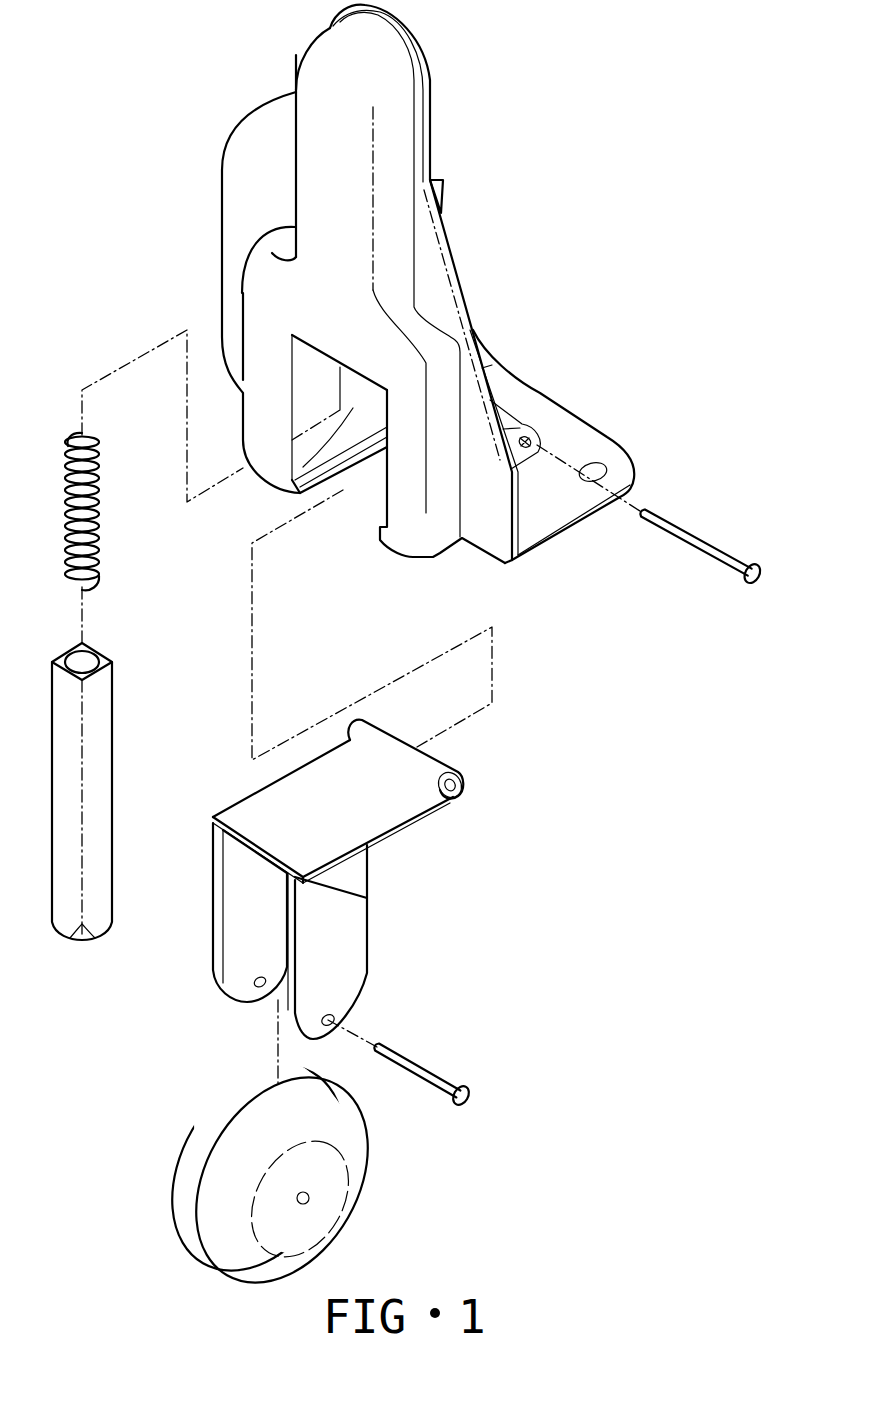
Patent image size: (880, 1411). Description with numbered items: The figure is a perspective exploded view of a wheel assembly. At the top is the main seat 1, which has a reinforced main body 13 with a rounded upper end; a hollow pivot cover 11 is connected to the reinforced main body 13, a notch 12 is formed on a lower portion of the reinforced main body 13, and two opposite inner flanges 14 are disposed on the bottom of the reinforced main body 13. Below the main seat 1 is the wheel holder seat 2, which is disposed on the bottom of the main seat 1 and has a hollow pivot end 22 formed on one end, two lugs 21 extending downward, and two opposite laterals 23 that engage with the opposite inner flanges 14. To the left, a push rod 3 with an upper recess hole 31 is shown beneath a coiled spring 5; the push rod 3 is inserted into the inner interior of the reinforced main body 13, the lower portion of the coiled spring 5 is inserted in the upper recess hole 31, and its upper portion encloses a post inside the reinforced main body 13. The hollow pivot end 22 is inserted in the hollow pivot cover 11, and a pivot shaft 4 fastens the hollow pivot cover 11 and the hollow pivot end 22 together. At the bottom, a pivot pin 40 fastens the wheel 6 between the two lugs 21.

The main seat 1 is at (478, 278).
The hollow pivot cover 11 is at (535, 410).
The notch 12 is at (272, 477).
The reinforced main body 13 is at (318, 60).
The inner flanges 14 is at (310, 483).
The wheel holder seat 2 is at (440, 827).
The lugs 21 is at (362, 973).
The hollow pivot end 22 is at (462, 783).
The laterals 23 is at (208, 827).
The push rod 3 is at (122, 792).
The upper recess hole 31 is at (88, 660).
The pivot shaft 4 is at (722, 542).
The pivot pin 40 is at (423, 1070).
The coiled spring 5 is at (103, 540).
The wheel 6 is at (345, 1213).